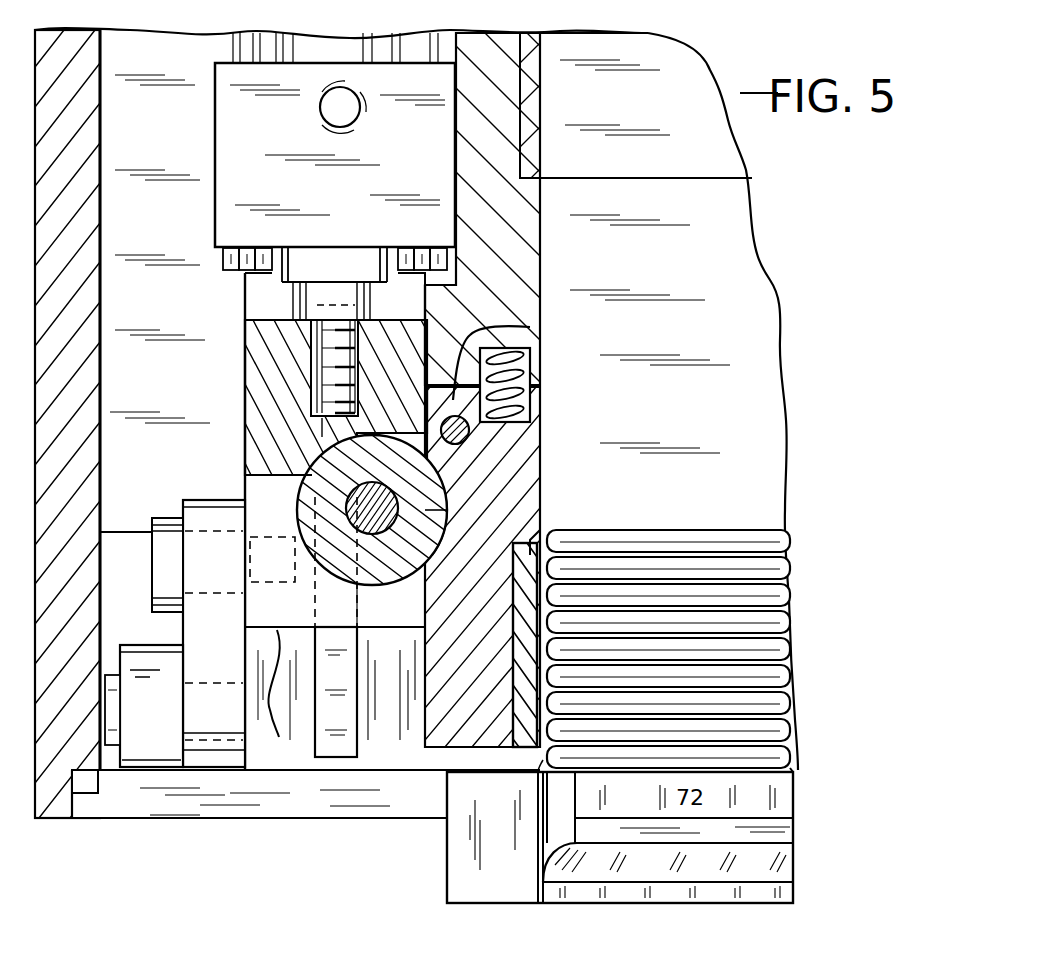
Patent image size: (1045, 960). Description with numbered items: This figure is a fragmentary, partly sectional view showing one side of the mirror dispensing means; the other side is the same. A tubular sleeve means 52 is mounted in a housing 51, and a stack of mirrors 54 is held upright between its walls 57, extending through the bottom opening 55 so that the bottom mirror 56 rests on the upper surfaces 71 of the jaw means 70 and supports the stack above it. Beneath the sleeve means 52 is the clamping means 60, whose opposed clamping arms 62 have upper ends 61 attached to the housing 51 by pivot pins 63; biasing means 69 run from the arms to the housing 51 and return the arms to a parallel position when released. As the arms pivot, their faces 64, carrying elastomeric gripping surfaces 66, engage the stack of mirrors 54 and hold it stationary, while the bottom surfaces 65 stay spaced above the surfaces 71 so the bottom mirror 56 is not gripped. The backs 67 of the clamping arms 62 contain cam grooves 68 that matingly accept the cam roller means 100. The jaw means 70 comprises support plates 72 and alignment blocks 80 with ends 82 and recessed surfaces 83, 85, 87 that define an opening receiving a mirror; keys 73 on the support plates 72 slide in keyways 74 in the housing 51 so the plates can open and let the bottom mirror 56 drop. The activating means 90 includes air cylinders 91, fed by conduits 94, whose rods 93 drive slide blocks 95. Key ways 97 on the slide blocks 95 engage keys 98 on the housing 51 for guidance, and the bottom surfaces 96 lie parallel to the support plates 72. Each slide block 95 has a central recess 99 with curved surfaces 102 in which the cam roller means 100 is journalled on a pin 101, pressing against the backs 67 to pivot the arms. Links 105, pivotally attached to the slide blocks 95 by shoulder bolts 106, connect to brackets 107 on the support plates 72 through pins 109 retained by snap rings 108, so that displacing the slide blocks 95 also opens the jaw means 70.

The housing 51 is at (540, 75).
The sleeve means 52 is at (545, 48).
The stack of mirrors 54 is at (672, 532).
The bottom opening 55 is at (545, 178).
The bottom mirror 56 is at (540, 763).
The walls 57 is at (532, 128).
The clamping means 60 is at (565, 426).
The upper ends 61 is at (532, 320).
The clamping arms 62 is at (515, 458).
The pivot pins 63 is at (525, 428).
The faces 64 is at (540, 490).
The bottom surfaces 65 is at (428, 757).
The gripping surfaces 66 is at (540, 528).
The backs 67 is at (420, 582).
The cam grooves 68 is at (445, 518).
The biasing means 69 is at (532, 362).
The jaw means 70 is at (812, 797).
The upper surfaces 71 is at (778, 772).
The support plates 72 is at (298, 778).
The keys 73 is at (95, 782).
The keyways 74 is at (80, 792).
The alignment blocks 80 is at (470, 912).
The ends 82 is at (506, 837).
The recessed surface 83 is at (800, 830).
The recessed surface 85 is at (790, 860).
The recessed surface 87 is at (800, 890).
The activating means 90 is at (205, 143).
The cylinders 91 is at (214, 195).
The rods 93 is at (350, 300).
The conduits 94 is at (320, 112).
The slide blocks 95 is at (245, 343).
The bottom surfaces 96 is at (278, 695).
The key ways 97 is at (328, 330).
The keys 98 is at (322, 655).
The recesses 99 is at (246, 480).
The cam roller means 100 is at (345, 497).
The pins 101 is at (358, 512).
The curved surfaces 102 is at (327, 437).
The links 105 is at (218, 500).
The shoulder bolts 106 is at (170, 548).
The brackets 107 is at (152, 650).
The snap rings 108 is at (138, 690).
The pins 109 is at (130, 715).